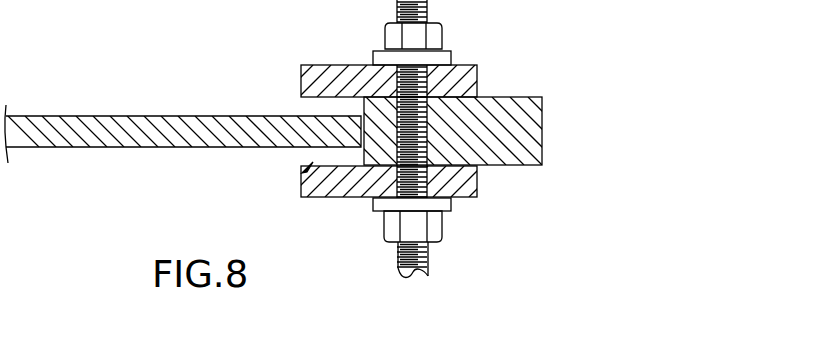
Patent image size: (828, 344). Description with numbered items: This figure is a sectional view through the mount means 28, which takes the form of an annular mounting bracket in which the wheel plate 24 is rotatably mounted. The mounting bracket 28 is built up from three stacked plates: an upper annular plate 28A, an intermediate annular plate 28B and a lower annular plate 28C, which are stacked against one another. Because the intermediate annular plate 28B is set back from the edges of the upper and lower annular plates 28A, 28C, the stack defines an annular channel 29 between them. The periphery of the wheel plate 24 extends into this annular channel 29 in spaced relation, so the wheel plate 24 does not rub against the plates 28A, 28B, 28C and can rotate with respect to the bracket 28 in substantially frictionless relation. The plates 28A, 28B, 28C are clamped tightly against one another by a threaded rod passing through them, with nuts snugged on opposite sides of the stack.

The wheel plate 24 is at (128, 128).
The mount means 28 is at (500, 124).
The upper annular plate 28A is at (452, 75).
The intermediate annular plate 28B is at (517, 132).
The lower annular plate 28C is at (468, 190).
The annular channel 29 is at (309, 168).